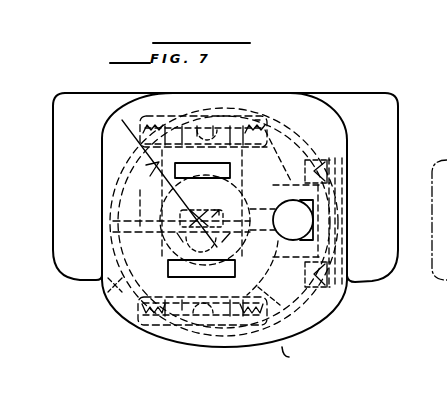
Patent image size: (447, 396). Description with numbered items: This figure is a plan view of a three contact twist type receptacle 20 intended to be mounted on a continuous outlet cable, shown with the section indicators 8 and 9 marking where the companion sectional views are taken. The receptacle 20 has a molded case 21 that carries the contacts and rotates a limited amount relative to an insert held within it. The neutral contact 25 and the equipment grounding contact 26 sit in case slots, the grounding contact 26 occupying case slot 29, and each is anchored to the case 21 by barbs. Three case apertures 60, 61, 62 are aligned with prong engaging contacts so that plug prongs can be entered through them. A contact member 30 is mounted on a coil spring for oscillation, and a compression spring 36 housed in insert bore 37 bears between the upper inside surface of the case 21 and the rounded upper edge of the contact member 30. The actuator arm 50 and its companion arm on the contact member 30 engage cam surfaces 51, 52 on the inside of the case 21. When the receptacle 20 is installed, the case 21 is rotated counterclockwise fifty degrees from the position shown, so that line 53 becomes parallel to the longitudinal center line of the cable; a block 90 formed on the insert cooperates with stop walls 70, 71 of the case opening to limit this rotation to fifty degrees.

The three contact twist type receptacle 20 is at (325, 331).
The molded case 21 is at (281, 359).
The neutral contact 25 is at (162, 329).
The equipment grounding contact 26 is at (316, 157).
The case slot 29 is at (268, 133).
The contact member 30 is at (149, 221).
The compression spring 36 is at (214, 213).
The insert bore 37 is at (213, 204).
The actuator arm 50 is at (110, 115).
The cam surface 51 is at (252, 272).
The cam surface 52 is at (128, 195).
The line 53 is at (133, 118).
The case aperture 60 is at (230, 173).
The case aperture 61 is at (172, 273).
The case aperture 62 is at (279, 203).
The stop wall 70 is at (126, 291).
The stop wall 71 is at (166, 199).
The block 90 is at (100, 278).
The section line 8- 8 is at (203, 110).
The section line 9- 9 is at (130, 221).